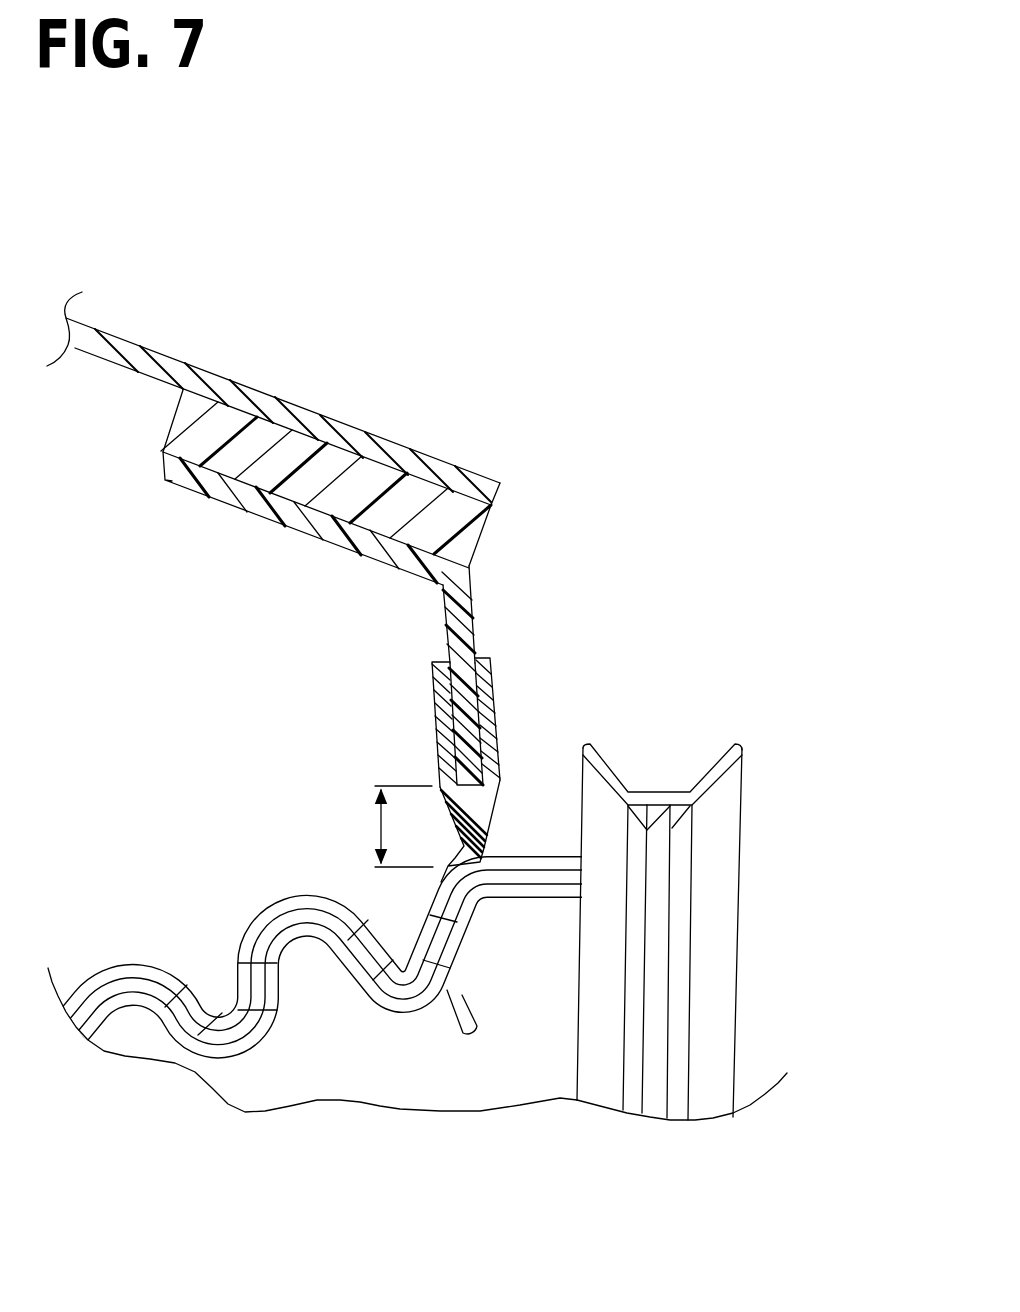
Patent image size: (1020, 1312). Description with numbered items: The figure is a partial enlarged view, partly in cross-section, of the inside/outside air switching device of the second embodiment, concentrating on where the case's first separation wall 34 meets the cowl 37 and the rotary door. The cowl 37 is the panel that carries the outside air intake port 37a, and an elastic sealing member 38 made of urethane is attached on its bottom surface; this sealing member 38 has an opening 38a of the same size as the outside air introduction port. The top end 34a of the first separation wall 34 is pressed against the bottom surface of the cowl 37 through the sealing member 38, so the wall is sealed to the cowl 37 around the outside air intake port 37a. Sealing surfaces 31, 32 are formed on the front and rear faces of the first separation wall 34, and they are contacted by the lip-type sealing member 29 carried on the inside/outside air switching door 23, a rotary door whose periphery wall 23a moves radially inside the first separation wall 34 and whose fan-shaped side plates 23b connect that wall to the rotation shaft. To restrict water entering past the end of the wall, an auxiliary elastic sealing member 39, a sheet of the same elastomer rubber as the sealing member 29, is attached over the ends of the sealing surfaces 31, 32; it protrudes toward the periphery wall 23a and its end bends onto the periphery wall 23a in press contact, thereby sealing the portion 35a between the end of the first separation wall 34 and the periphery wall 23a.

The inside/outside air switching door 23 is at (332, 1110).
The periphery wall 23a is at (130, 962).
The side plate 23b is at (413, 1073).
The sealing member 29 is at (744, 792).
The sealing surface 31 is at (445, 623).
The sealing surface 32 is at (476, 640).
The first separation wall 34 is at (472, 595).
The top end of the first separation wall 34a is at (290, 520).
The portion between the end of the partition wall and the periphery wall 35a is at (377, 828).
The cowl 37 is at (330, 427).
The outside air intake port 37a is at (502, 492).
The elastic sealing member 38 is at (417, 490).
The opening 38a is at (483, 542).
The auxiliary elastic sealing member 39 is at (478, 806).